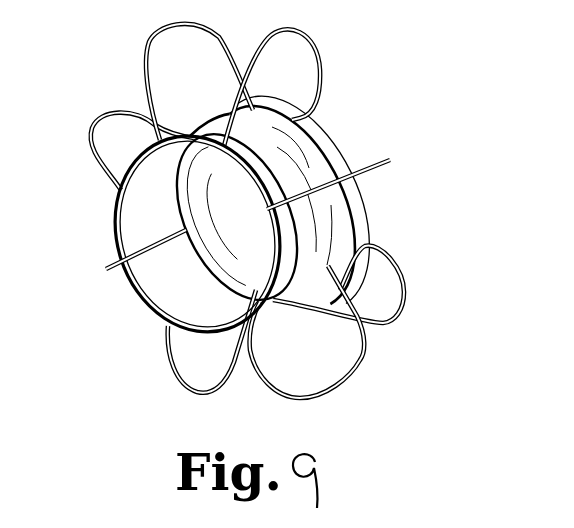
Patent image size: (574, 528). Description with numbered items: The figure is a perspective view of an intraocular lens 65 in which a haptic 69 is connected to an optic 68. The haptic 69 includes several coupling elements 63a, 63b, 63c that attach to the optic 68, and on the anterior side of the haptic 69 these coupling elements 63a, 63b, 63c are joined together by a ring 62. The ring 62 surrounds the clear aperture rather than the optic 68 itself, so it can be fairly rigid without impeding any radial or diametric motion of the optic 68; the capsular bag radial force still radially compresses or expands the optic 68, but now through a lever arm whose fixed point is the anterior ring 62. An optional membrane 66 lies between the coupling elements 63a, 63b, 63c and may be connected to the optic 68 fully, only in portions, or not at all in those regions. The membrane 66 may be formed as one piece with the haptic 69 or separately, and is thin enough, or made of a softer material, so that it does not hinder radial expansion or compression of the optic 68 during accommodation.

The ring 62 is at (130, 305).
The coupling element 63a is at (383, 322).
The coupling element 63b is at (330, 398).
The coupling element 63c is at (187, 384).
The intraocular lens 65 is at (265, 235).
The membrane 66 is at (330, 147).
The optic 68 is at (373, 198).
The haptic 69 is at (320, 50).